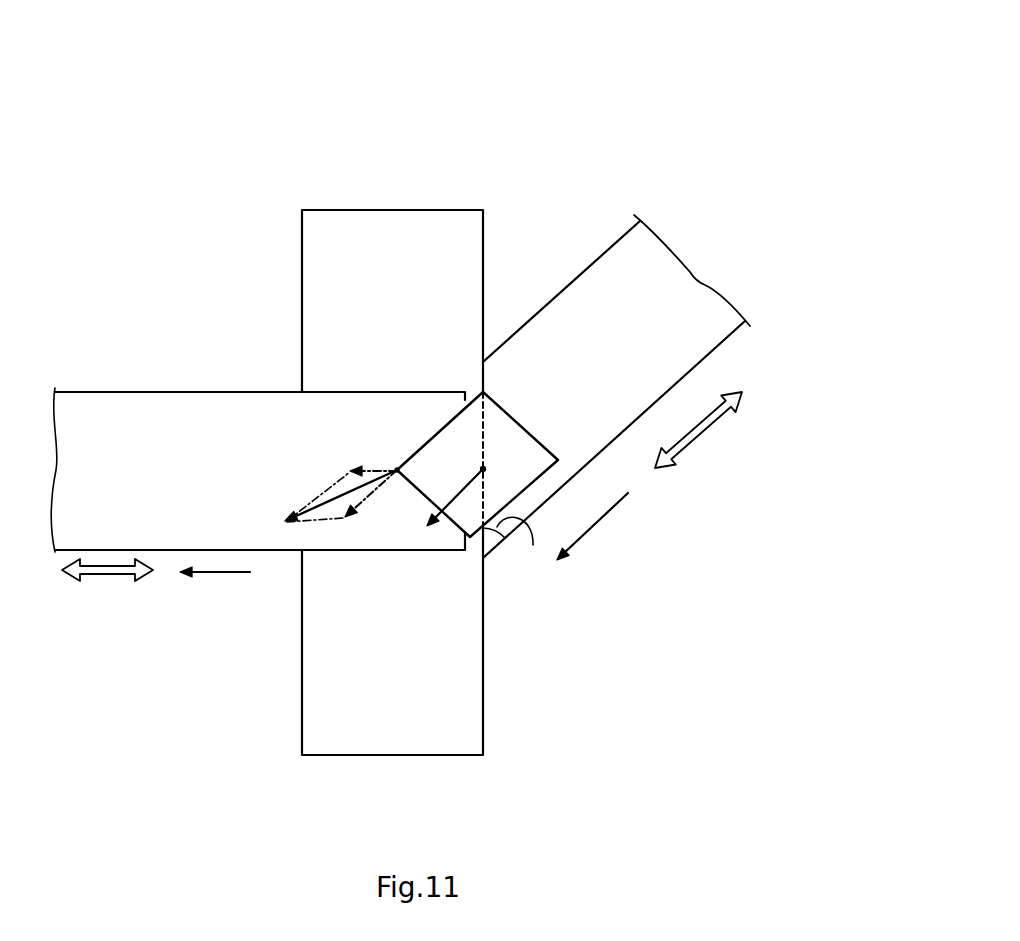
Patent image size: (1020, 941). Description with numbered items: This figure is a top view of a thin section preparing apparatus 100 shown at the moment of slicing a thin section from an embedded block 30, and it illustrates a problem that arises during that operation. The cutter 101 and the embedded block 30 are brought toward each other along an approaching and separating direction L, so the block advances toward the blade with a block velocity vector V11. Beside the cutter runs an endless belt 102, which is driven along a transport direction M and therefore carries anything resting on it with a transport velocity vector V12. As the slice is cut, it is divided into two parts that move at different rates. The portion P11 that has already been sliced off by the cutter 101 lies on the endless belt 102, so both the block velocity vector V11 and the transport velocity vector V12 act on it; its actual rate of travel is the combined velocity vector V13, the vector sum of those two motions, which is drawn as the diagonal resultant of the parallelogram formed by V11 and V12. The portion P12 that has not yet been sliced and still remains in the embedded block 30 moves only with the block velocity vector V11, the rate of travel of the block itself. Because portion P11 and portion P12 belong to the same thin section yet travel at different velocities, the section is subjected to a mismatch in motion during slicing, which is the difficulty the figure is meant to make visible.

The welding system / assembly 100 is at (788, 134).
The cutter 101 is at (413, 222).
The endless belt 102 is at (100, 405).
The welding torch / tool 30 is at (688, 293).
The portion placed on the endless belt P11 is at (397, 470).
The portion remaining in the embedded block P12 is at (522, 442).
The block velocity vector V11 is at (365, 592).
The transport velocity vector V12 is at (370, 470).
The combined velocity vector V13 is at (342, 497).
The transport direction M is at (107, 589).
The approaching and separating direction L is at (698, 430).